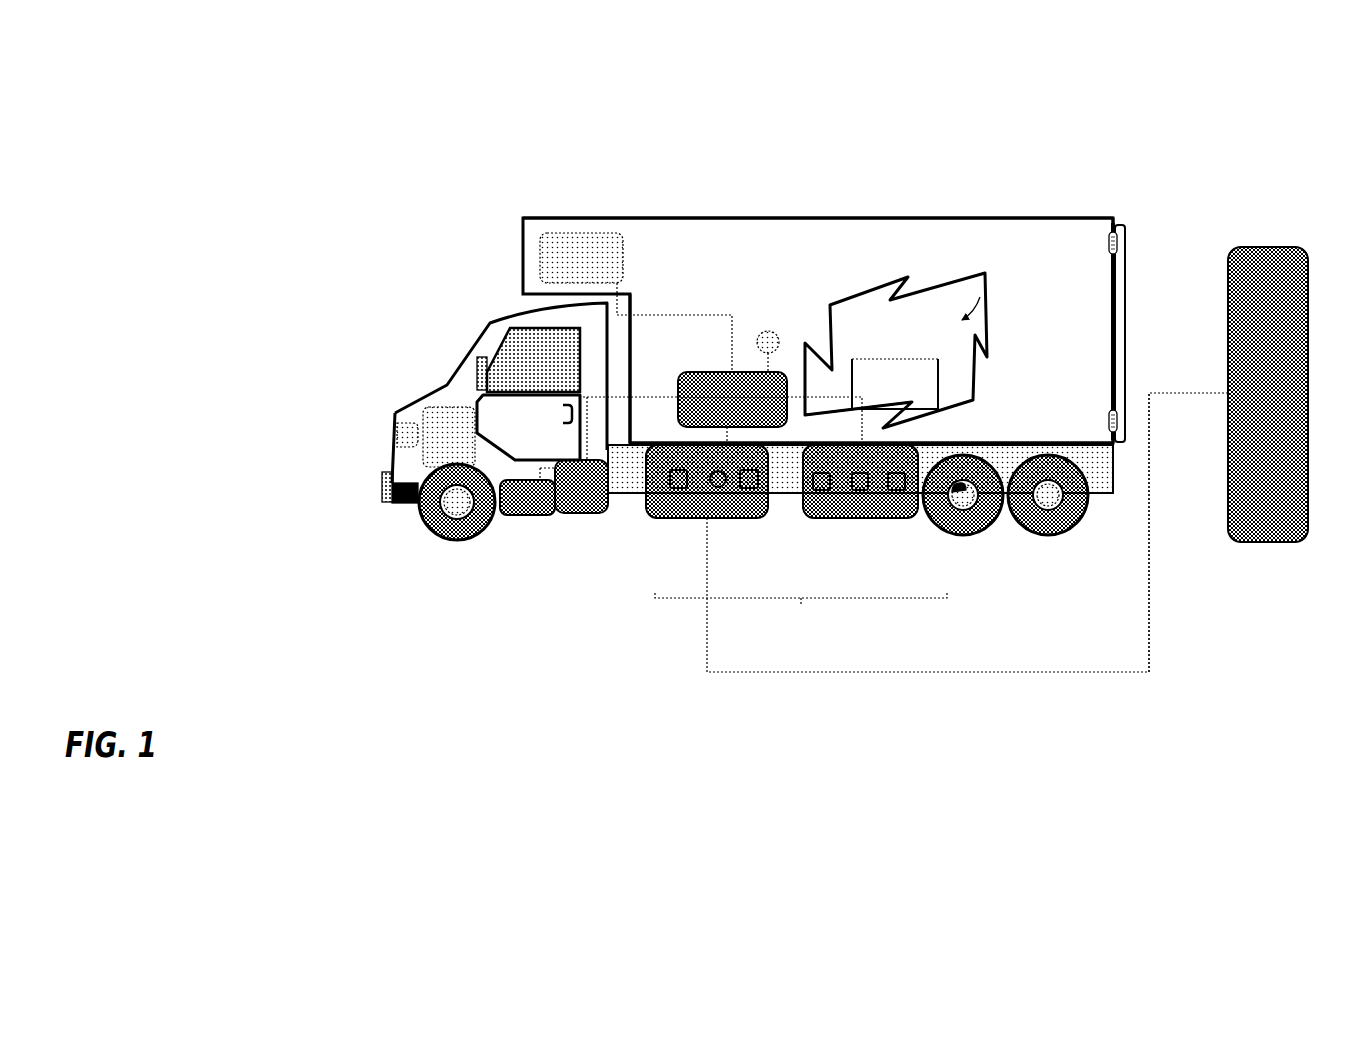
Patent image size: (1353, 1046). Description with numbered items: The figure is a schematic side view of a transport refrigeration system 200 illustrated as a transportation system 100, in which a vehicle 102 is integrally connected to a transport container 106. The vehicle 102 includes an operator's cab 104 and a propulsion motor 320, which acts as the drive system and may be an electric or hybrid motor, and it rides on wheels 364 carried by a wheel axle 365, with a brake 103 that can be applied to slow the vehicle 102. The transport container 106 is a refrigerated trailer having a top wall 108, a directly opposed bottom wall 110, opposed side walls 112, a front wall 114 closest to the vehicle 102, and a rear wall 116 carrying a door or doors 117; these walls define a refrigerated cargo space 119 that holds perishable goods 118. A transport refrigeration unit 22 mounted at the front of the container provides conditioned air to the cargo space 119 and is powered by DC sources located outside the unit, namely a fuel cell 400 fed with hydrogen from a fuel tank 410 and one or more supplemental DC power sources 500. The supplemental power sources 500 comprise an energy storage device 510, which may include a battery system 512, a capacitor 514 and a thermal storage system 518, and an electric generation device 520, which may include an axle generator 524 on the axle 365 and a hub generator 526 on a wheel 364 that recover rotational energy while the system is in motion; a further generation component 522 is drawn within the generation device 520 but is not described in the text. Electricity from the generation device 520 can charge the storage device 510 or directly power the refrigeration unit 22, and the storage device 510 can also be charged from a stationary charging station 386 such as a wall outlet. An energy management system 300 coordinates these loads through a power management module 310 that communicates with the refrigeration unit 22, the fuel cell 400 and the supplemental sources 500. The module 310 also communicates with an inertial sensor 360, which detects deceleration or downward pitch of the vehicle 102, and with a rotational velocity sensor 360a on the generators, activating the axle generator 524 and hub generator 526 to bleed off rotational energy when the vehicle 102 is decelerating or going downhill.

The transportation system 100 is at (531, 108).
The transport refrigeration system 200 is at (626, 193).
The transport refrigeration unit 22 is at (563, 232).
The top wall 108 is at (782, 218).
The transport container 106 is at (908, 228).
The bottom wall 110 is at (975, 447).
The front wall 114 is at (633, 347).
The rear wall 116 is at (1112, 285).
The door 117 is at (1117, 338).
The side walls 112 is at (833, 263).
The refrigerated cargo space 119 is at (985, 287).
The perishable goods 118 is at (893, 395).
The vehicle 102 is at (401, 505).
The cab 104 is at (505, 350).
The propulsion motor 320 is at (433, 410).
The brake 103 is at (943, 507).
The wheel 364 is at (1003, 515).
The axle 365 is at (967, 502).
The fuel tank 410 is at (522, 513).
The fuel cell 400 is at (573, 513).
The energy storage device 510 is at (648, 505).
The battery system 512 is at (684, 490).
The capacitor 514 is at (718, 488).
The thermal storage system 518 is at (752, 490).
The electric generation device 520 is at (910, 445).
The battery cell 522 is at (822, 492).
The axle generator 524 is at (860, 491).
The hub generator 526 is at (897, 492).
The supplemental DC power sources 500 is at (801, 615).
The power management module 310 is at (686, 372).
The inertial sensor 360 is at (760, 333).
The rotational velocity sensor 360a is at (812, 447).
The stationary charging station 386 is at (1282, 543).
The energy management system 300 is at (1206, 683).